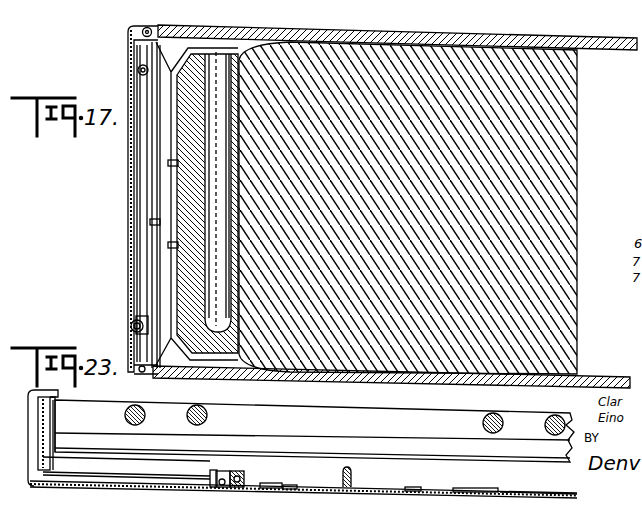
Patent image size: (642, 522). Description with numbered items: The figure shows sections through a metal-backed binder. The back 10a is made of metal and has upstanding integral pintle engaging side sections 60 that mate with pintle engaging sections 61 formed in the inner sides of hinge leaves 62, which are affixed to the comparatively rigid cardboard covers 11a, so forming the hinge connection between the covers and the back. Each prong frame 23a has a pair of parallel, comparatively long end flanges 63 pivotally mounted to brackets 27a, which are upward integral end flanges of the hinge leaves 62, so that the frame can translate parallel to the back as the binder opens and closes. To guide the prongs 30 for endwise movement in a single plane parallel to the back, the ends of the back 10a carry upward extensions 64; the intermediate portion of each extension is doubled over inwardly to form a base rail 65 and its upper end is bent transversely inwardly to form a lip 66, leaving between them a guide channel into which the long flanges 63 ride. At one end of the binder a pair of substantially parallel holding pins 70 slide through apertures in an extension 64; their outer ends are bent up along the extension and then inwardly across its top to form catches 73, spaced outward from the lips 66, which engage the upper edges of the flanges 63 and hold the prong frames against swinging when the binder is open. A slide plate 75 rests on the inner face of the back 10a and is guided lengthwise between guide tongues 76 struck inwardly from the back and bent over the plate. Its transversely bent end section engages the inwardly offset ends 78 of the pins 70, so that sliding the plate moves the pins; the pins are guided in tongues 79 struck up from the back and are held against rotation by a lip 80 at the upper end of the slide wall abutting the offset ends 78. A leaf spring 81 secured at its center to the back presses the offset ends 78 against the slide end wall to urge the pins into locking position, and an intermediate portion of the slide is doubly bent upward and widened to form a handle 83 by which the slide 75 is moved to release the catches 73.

In FIG. 17, the back 10a is at (134, 196).
In FIG. 23, the back 10a is at (535, 492).
In FIG. 17, the cover 11a is at (600, 376).
In FIG. 17, the prong frame 23a is at (238, 48).
In FIG. 23, the prong frame 23a is at (372, 420).
In FIG. 17, the bracket 27a is at (172, 46).
In FIG. 17, the prong 30 is at (216, 264).
In FIG. 23, the prong 30 is at (186, 418).
In FIG. 17, the pintle engaging side section 60 is at (136, 46).
In FIG. 17, the pintle engaging section 61 is at (144, 30).
In FIG. 17, the hinge leaf 62 is at (192, 46).
In FIG. 17, the end flange 63 is at (176, 163).
In FIG. 17, the upward extension 64 is at (397, 25).
In FIG. 23, the upward extension 64 is at (46, 469).
In FIG. 17, the base rail 65 is at (166, 222).
In FIG. 23, the base rail 65 is at (84, 459).
In FIG. 23, the lip 66 is at (57, 405).
In FIG. 17, the holding pin 70 is at (134, 322).
In FIG. 23, the holding pin 70 is at (30, 422).
In FIG. 23, the catch 73 is at (60, 391).
In FIG. 23, the slide plate 75 is at (413, 487).
In FIG. 23, the guide tongue 76 is at (286, 485).
In FIG. 23, the offset end 78 is at (250, 484).
In FIG. 23, the tongue 79 is at (208, 472).
In FIG. 23, the lip 80 is at (240, 470).
In FIG. 23, the leaf spring 81 is at (224, 470).
In FIG. 23, the handle 83 is at (353, 472).